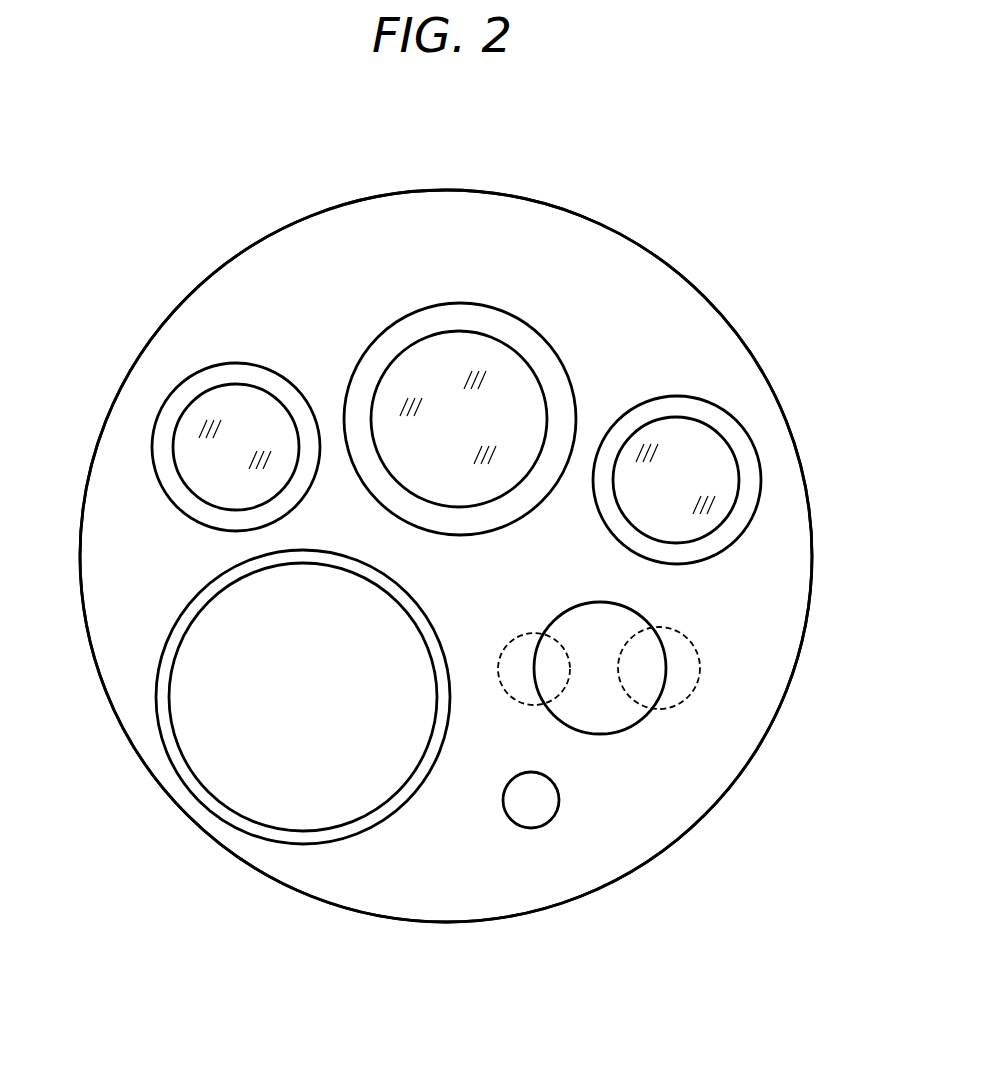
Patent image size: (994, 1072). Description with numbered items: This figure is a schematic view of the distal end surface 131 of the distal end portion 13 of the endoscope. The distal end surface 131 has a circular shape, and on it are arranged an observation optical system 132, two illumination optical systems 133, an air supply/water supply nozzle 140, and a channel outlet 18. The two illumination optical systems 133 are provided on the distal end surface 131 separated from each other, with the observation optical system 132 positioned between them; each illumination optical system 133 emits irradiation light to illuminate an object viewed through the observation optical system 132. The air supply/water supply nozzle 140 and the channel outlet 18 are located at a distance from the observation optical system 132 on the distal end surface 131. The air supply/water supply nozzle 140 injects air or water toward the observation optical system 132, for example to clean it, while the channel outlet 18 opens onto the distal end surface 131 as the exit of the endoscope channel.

The distal end portion 13 is at (622, 147).
The distal end surface 131 is at (643, 302).
The observation optical system 132 is at (423, 322).
The illumination optical system 133 is at (220, 377).
The channel outlet 18 is at (312, 827).
The air supply/water supply nozzle 140 is at (618, 732).